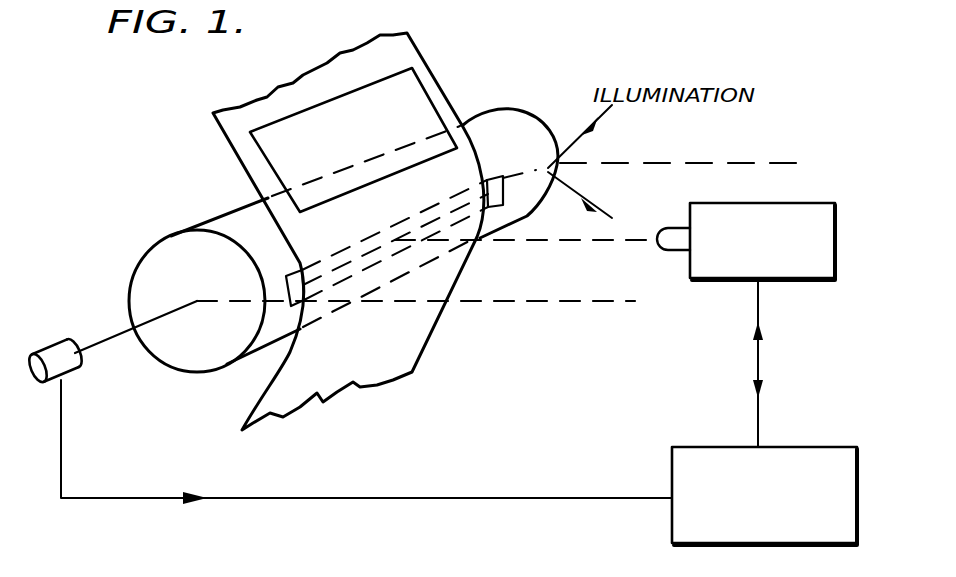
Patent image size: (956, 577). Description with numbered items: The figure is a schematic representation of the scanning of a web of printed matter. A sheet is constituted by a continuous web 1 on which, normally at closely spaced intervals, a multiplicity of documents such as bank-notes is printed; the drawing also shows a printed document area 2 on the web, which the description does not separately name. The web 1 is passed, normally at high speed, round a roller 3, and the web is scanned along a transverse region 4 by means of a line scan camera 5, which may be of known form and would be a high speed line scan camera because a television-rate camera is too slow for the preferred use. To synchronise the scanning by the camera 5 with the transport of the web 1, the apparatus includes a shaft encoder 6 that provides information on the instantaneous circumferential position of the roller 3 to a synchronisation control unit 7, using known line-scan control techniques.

The continuous web 1 is at (412, 50).
The printed image area 2 is at (270, 140).
The roller 3 is at (217, 224).
The transverse region 4 is at (298, 333).
The line scan camera 5 is at (813, 204).
The shaft encoder 6 is at (63, 344).
The synchronisation control unit 7 is at (683, 447).